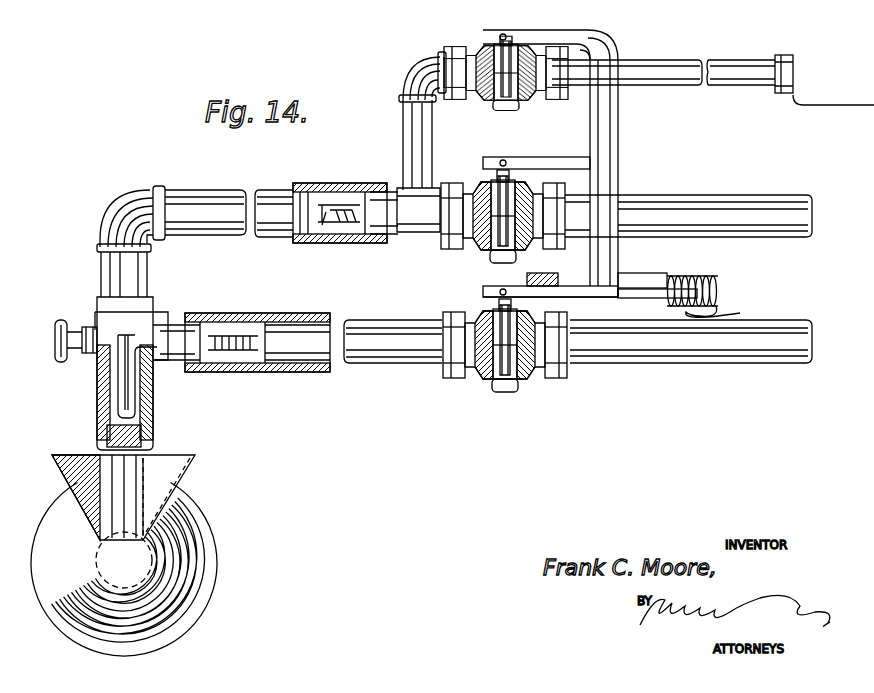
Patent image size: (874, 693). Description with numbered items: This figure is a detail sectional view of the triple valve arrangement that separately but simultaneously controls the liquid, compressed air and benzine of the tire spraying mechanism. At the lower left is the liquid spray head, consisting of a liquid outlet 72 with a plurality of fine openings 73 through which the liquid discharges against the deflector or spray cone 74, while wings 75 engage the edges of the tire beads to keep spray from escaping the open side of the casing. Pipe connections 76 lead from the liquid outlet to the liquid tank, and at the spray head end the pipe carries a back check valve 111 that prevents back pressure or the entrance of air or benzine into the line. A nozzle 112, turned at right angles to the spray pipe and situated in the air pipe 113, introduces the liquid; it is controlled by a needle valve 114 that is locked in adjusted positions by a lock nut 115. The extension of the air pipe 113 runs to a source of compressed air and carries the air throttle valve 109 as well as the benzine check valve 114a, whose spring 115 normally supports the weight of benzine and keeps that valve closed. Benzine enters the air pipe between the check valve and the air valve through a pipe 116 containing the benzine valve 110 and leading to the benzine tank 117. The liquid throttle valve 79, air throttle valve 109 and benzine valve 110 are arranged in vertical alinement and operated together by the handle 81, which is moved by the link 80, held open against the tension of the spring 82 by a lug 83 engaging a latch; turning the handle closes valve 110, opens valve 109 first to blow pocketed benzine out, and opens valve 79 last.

The liquid outlet 72 is at (134, 567).
The fine openings 73 is at (175, 527).
The spray cone 74 is at (197, 546).
The wings 75 is at (170, 473).
The pipe connections 76 is at (609, 353).
The throttle valve 79 is at (477, 365).
The link 80 is at (625, 281).
The handle 81 is at (677, 290).
The spring 82 is at (695, 284).
The lug 83 is at (733, 313).
The air throttle valve 109 is at (497, 193).
The benzine valve 110 is at (515, 46).
The back check valve 111 is at (238, 309).
The nozzle 112 is at (128, 386).
The air pipe 113 is at (191, 196).
The needle valve 114 is at (60, 322).
The benzine check valve 114a is at (362, 193).
The lock nut 115 is at (84, 352).
The pipe 116 is at (412, 128).
The tank 117 is at (803, 15).